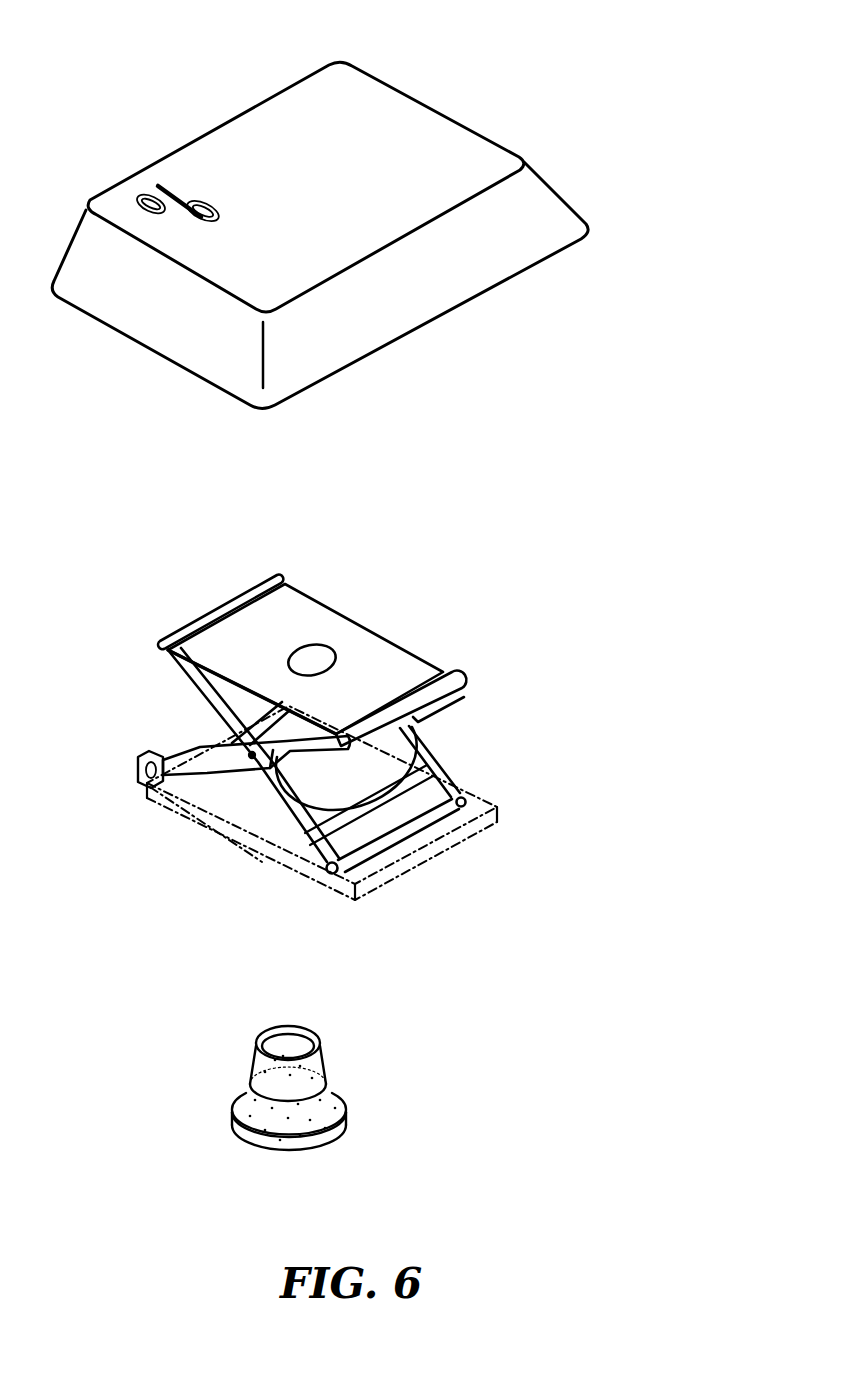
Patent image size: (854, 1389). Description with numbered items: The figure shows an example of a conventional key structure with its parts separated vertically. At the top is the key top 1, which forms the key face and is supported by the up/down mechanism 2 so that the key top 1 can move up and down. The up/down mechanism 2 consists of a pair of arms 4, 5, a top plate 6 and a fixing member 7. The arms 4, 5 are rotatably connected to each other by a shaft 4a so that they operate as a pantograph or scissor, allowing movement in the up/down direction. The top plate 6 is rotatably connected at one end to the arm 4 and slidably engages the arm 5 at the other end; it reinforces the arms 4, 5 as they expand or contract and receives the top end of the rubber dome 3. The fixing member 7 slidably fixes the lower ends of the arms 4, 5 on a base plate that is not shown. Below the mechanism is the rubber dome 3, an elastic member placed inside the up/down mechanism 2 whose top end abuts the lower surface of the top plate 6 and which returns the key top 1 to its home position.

The key top 1 is at (431, 135).
The up/down mechanism 2 is at (326, 715).
The rubber dome 3 is at (350, 1100).
The arm 4 is at (180, 670).
The shaft 4a is at (252, 758).
The arm 5 is at (193, 771).
The top plate 6 is at (308, 620).
The fixing member 7 is at (477, 825).